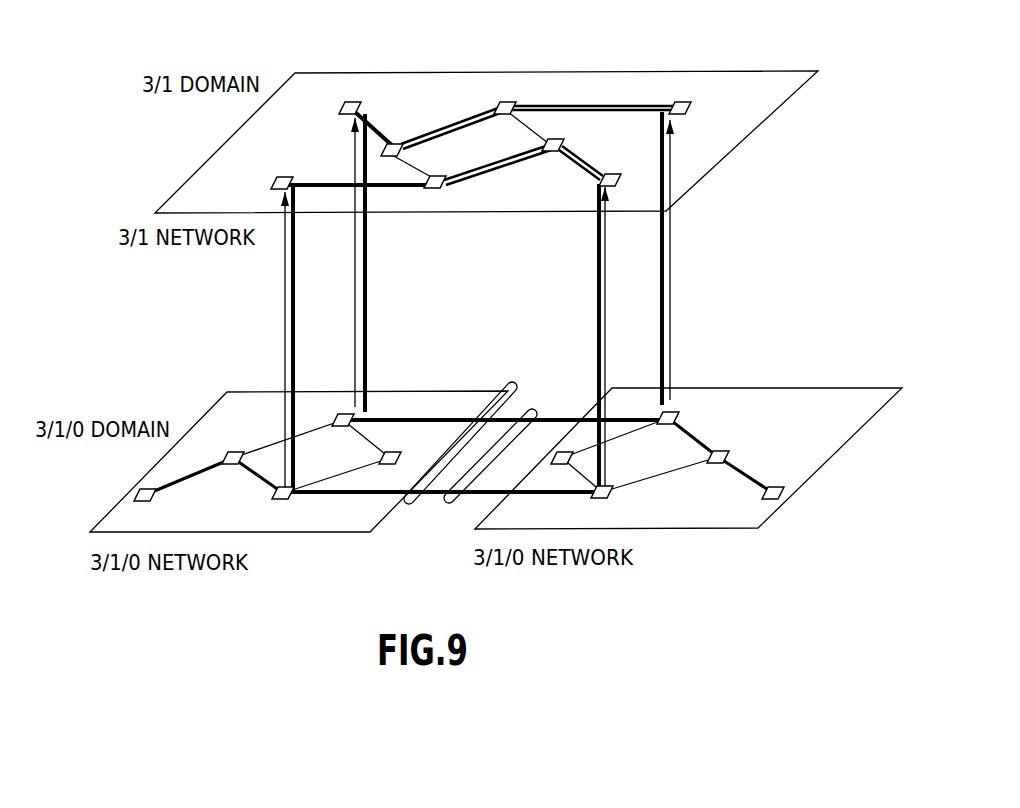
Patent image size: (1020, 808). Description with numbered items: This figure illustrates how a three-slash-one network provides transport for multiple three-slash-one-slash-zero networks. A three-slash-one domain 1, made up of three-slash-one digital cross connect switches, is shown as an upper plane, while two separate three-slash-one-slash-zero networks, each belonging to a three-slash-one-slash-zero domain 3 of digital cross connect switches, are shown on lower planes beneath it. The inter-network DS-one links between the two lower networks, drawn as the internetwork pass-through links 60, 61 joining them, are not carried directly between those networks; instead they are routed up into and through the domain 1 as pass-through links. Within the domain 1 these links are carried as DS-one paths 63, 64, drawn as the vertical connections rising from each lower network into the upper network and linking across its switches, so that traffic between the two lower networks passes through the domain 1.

The 3/1 domain 1 is at (443, 82).
The 3/1/0 domain 3 is at (228, 392).
The internetwork pass-through link 60 is at (460, 456).
The internetwork pass-through link 61 is at (423, 498).
The DS1 path 63 is at (668, 270).
The DS1 path 64 is at (596, 260).